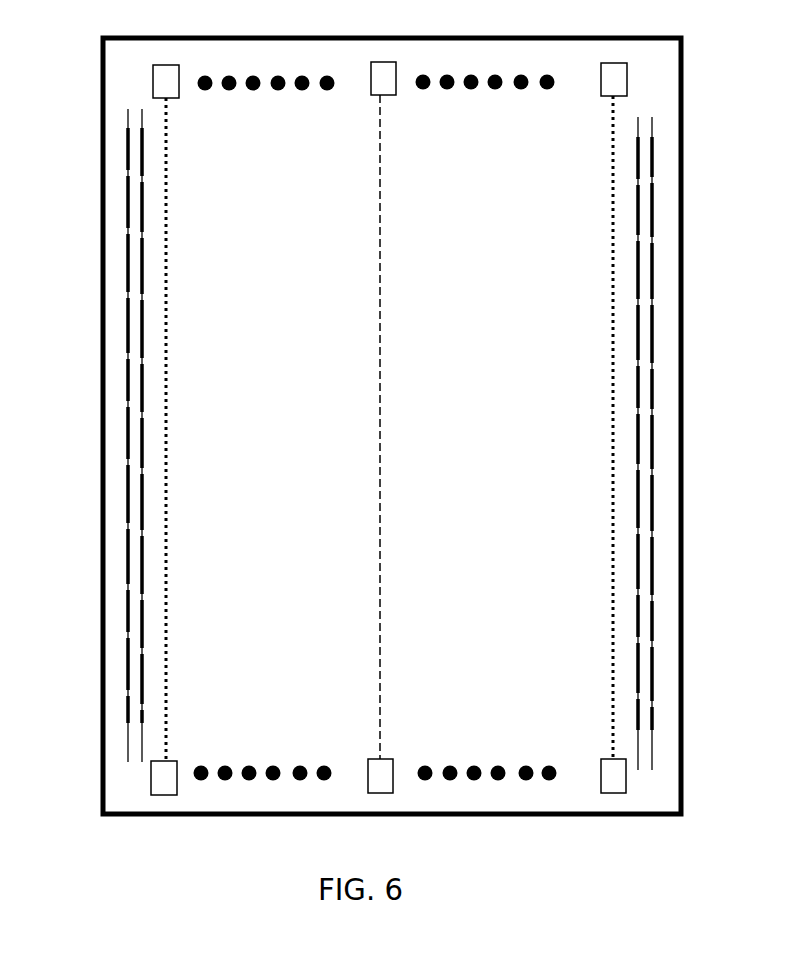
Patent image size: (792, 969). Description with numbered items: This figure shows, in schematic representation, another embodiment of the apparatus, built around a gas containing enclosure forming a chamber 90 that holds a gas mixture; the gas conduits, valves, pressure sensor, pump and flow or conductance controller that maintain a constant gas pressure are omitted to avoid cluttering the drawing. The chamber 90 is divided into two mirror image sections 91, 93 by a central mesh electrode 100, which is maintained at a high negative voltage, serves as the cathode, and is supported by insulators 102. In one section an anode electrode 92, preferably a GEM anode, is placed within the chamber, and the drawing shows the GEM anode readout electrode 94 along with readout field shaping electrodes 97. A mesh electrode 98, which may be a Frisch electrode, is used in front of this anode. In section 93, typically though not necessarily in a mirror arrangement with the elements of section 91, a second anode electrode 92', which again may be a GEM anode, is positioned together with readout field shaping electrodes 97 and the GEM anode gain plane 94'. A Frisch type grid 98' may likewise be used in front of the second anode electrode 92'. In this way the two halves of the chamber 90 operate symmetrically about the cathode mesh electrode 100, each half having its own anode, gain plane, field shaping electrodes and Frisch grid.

The chamber 90 is at (100, 745).
The section 91 is at (472, 429).
The anode electrode 92 is at (700, 418).
The second anode electrode 92' is at (79, 430).
The section 93 is at (254, 437).
The GEM anode readout electrode 94 is at (592, 443).
The GEM anode gain plane 94' is at (196, 435).
The readout field shaping electrodes 97 is at (444, 95).
The mesh electrode 98 is at (564, 427).
The Frisch type grid 98' is at (208, 429).
The mesh electrode 100 is at (382, 551).
The insulators 102 is at (382, 766).